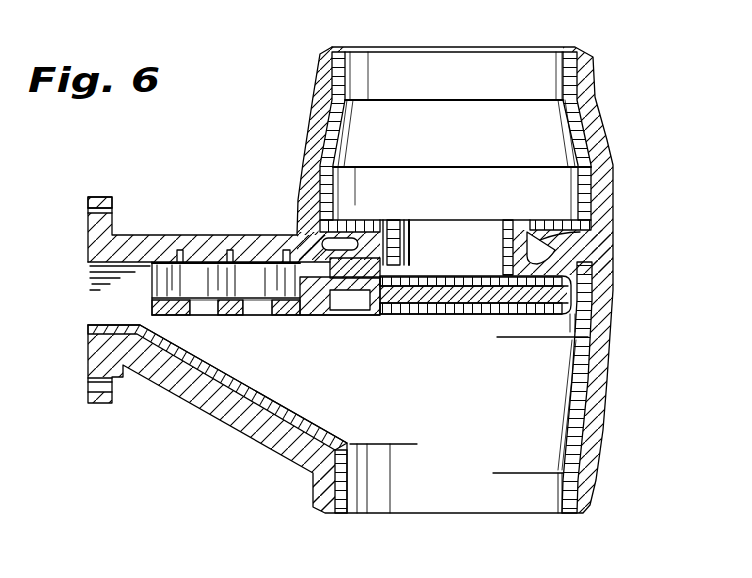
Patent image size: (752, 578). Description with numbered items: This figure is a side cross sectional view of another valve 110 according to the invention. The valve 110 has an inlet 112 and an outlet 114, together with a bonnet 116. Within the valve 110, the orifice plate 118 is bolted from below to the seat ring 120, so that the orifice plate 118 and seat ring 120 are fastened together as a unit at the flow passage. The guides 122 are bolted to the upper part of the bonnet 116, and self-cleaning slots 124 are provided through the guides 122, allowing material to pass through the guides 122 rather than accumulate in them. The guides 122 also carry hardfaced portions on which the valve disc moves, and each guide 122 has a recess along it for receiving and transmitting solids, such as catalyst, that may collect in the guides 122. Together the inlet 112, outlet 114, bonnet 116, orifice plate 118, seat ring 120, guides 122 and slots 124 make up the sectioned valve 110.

The valve 110 is at (253, 86).
The inlet 112 is at (596, 130).
The outlet 114 is at (600, 432).
The bonnet 116 is at (208, 407).
The orifice plate 118 is at (357, 248).
The seat ring 120 is at (316, 233).
The guides 122 is at (160, 268).
The self-cleaning slots 124 is at (208, 314).